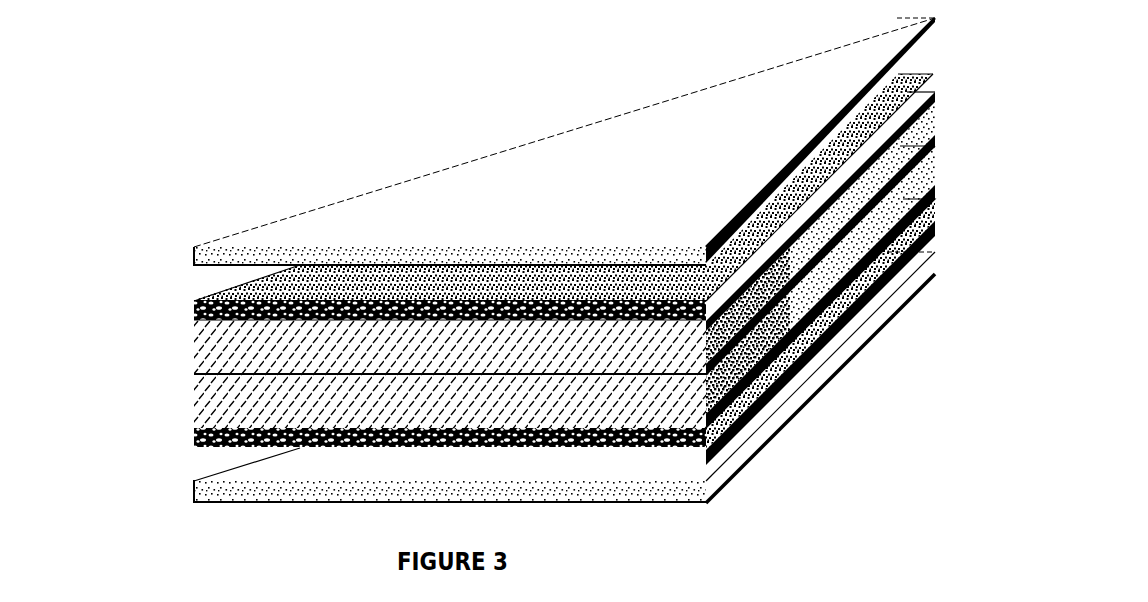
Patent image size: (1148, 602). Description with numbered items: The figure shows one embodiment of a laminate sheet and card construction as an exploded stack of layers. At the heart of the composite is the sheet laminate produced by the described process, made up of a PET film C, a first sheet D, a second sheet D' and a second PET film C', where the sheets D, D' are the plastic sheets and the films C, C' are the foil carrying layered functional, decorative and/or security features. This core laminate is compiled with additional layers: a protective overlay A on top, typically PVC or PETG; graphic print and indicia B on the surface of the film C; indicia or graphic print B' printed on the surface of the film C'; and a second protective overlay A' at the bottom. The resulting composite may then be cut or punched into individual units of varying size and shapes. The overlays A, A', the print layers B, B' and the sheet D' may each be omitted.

The protective overlay A is at (519, 141).
The graphic print and indicia layer B is at (491, 187).
The PET film C is at (518, 197).
The sheet D is at (492, 233).
The sheet D' is at (519, 287).
The PET film C' is at (492, 324).
The indicia or graphic print layer B' is at (511, 351).
The protective overlay A' is at (492, 377).